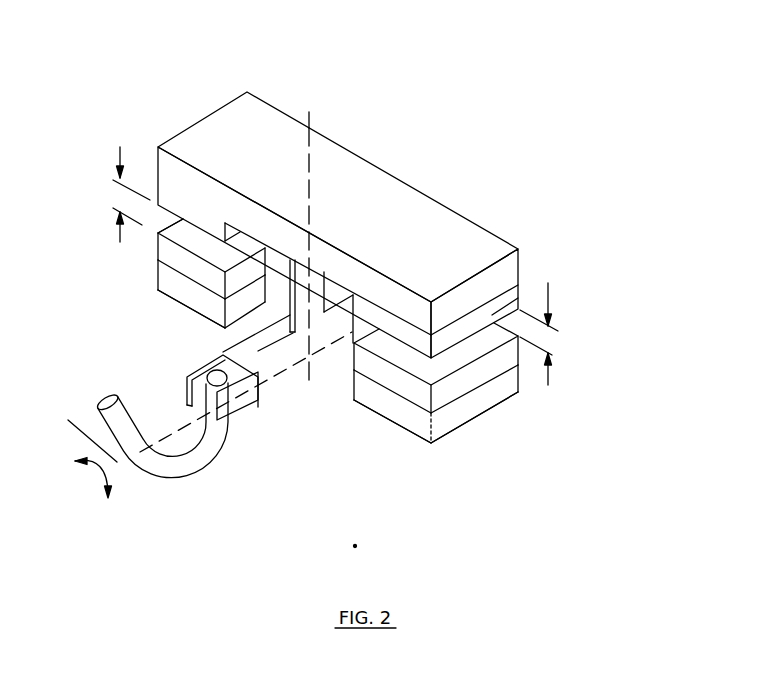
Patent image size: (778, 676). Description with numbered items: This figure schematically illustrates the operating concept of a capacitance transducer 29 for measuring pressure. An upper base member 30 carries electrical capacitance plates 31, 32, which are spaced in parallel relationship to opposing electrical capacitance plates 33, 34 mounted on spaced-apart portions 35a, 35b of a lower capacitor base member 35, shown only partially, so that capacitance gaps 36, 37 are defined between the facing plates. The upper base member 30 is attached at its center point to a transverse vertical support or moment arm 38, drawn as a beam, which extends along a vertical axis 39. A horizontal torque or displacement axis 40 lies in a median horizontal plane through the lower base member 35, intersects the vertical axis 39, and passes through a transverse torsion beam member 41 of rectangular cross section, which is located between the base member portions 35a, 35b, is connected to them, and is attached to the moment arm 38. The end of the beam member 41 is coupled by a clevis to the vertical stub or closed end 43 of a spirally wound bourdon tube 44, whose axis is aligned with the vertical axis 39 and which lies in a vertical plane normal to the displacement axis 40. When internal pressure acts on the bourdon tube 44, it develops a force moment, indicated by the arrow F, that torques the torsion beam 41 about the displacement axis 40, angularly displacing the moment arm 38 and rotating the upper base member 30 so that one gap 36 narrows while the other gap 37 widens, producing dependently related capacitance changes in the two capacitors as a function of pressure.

The capacitance transducer 29 is at (540, 250).
The upper base member 30 is at (368, 213).
The electrical capacitance plate 31 is at (172, 207).
The electrical capacitance plate 32 is at (522, 293).
The electrical capacitance plate 33 is at (172, 255).
The electrical capacitance plate 34 is at (407, 385).
The lower capacitor base member 35 is at (197, 300).
The base member portion 35a is at (173, 283).
The base member portion 35b is at (423, 445).
The capacitance gap 36 is at (188, 230).
The capacitance gap 37 is at (390, 350).
The vertical support or moment arm 38 is at (290, 295).
The vertical axis 39 is at (308, 117).
The horizontal torque or displacement axis 40 is at (81, 468).
The torsion beam member 41 is at (235, 402).
The closed end 43 is at (218, 437).
The spirally wound bourdon tube 44 is at (170, 468).